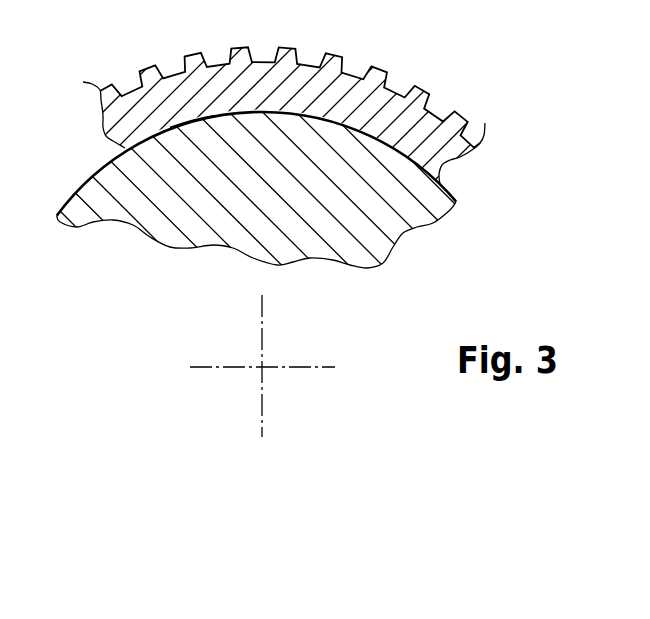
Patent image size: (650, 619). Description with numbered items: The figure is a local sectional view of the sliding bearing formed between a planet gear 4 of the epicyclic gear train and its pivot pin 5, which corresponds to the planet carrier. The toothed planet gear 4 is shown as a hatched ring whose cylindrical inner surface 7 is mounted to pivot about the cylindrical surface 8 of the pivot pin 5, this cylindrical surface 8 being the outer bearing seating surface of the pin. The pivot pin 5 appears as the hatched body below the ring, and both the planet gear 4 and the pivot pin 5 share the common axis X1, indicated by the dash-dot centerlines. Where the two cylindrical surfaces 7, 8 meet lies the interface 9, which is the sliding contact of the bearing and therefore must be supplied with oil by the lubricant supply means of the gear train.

The planet gear 4 is at (270, 80).
The pivot pin 5 is at (371, 230).
The cylindrical inner surface 7 is at (160, 133).
The cylindrical surface 8 is at (455, 183).
The interface 9 is at (190, 119).
The axis X1 is at (262, 367).